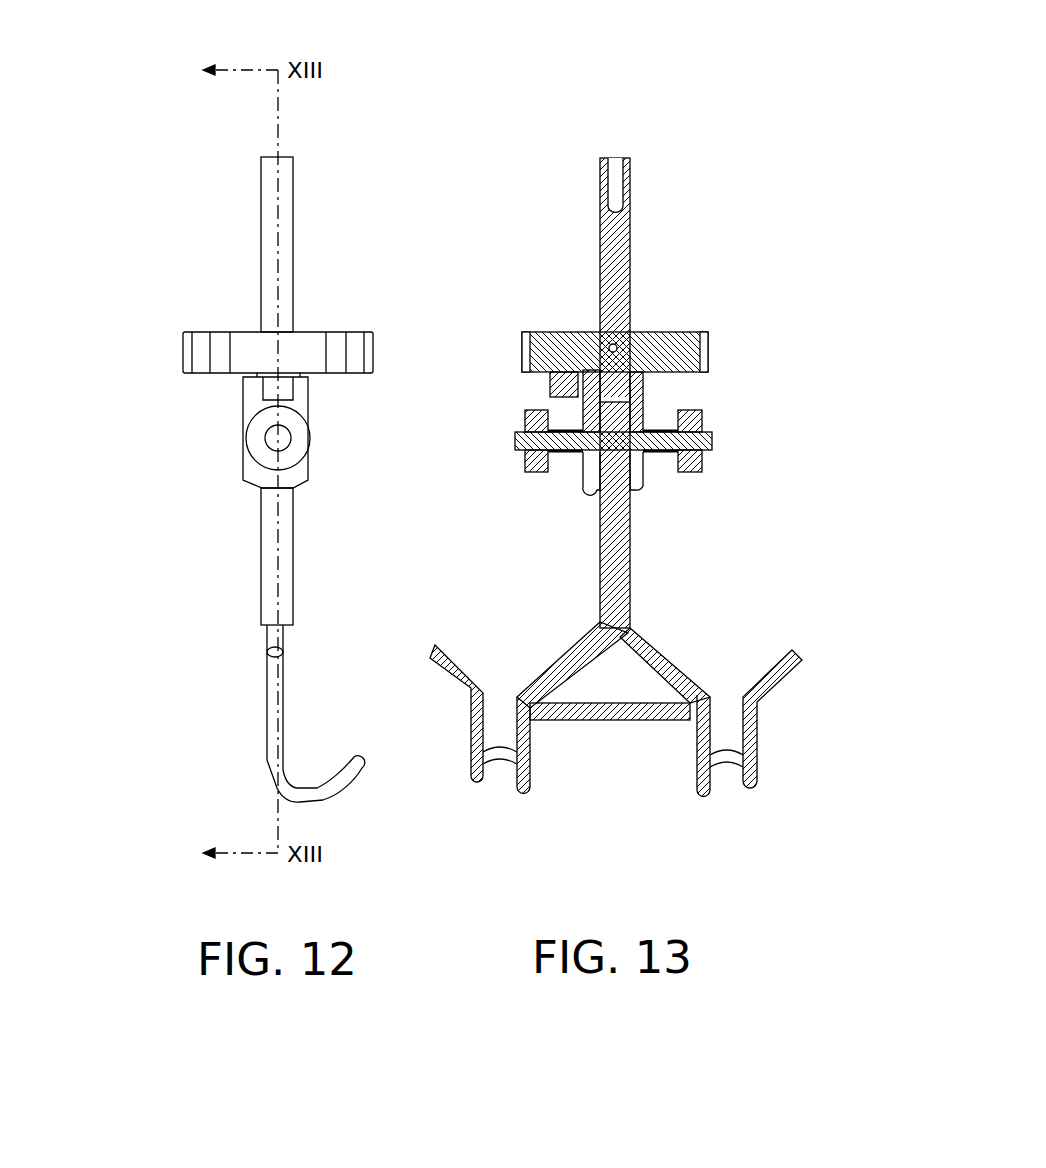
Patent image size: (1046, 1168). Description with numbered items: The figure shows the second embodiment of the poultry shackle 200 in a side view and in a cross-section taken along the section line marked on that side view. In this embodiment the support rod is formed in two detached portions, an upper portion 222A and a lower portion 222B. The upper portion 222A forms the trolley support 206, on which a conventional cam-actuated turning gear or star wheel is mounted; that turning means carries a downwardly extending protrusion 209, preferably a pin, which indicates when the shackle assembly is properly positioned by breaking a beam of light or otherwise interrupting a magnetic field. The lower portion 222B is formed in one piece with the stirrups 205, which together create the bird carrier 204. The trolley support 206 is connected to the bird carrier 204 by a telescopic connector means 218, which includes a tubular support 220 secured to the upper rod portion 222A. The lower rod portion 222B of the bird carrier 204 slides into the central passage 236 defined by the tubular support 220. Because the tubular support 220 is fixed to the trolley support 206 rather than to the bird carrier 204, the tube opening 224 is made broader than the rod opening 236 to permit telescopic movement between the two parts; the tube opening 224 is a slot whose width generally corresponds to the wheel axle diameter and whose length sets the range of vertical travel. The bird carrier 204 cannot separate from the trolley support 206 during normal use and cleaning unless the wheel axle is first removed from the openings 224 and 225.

In FIG. 12, the poultry shackle 200 is at (113, 54).
In FIG. 12, the bird carrier 204 is at (151, 727).
In FIG. 12, the stirrups 205 is at (327, 788).
In FIG. 13, the stirrups 205 is at (750, 795).
In FIG. 12, the trolley support 206 is at (252, 246).
In FIG. 12, the downwardly extending protrusion 209 is at (272, 386).
In FIG. 13, the downwardly extending protrusion 209 is at (550, 392).
In FIG. 12, the telescopic connector means 218 is at (330, 462).
In FIG. 13, the tubular support 220 is at (585, 488).
In FIG. 13, the upper portion of the rod 222A is at (630, 280).
In FIG. 13, the lower portion of the rod 222B is at (630, 590).
In FIG. 13, the tube opening 224 is at (637, 465).
In FIG. 13, the rod opening 225 is at (583, 462).
In FIG. 13, the central passage 236 is at (643, 403).